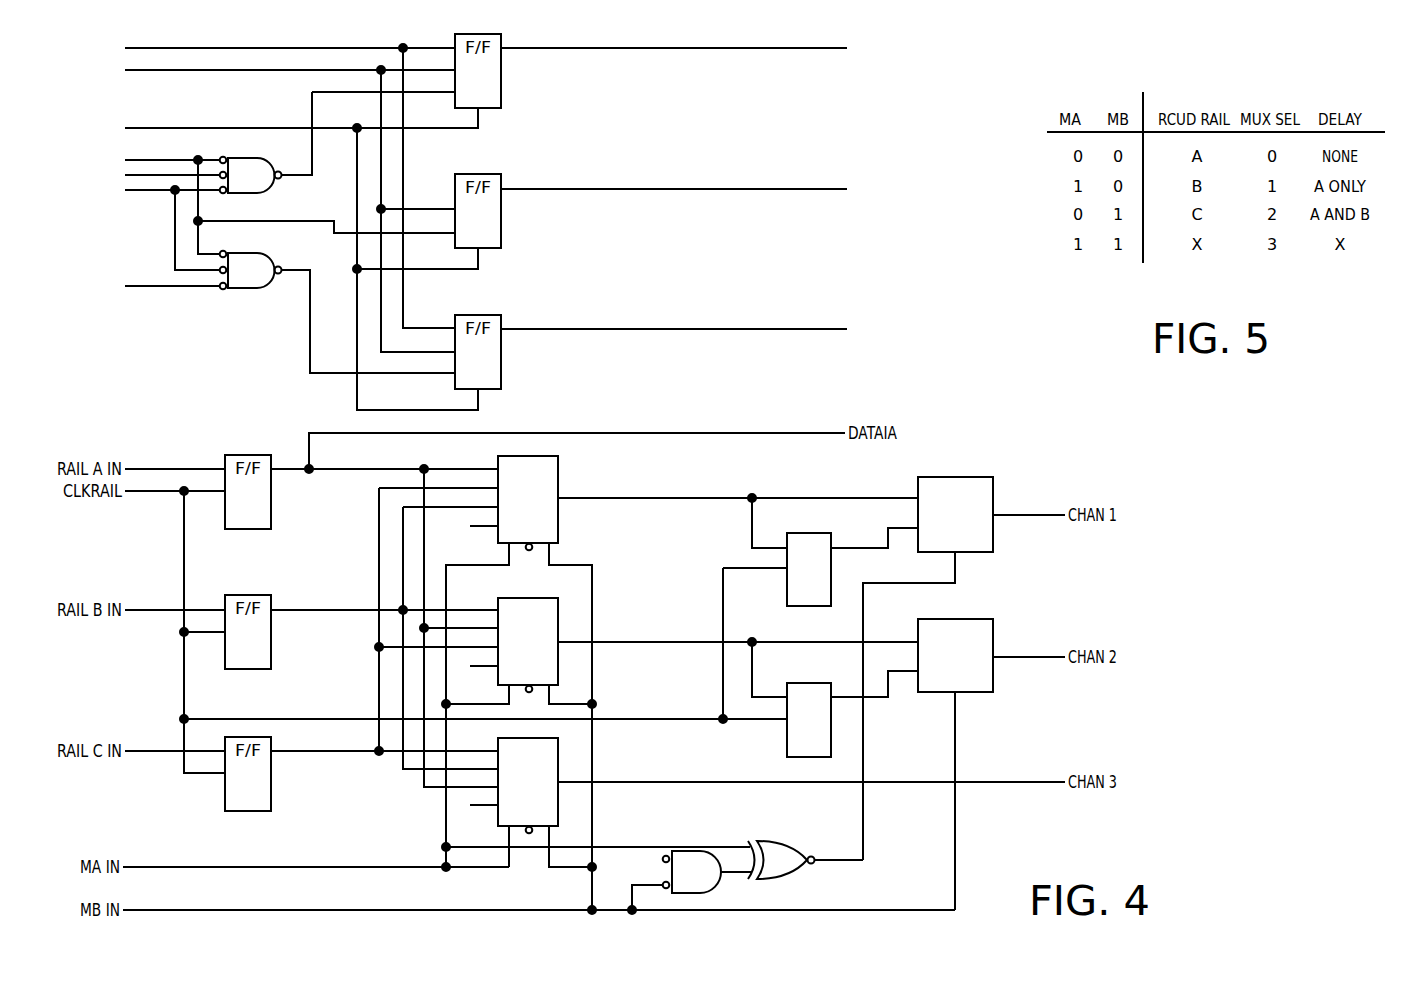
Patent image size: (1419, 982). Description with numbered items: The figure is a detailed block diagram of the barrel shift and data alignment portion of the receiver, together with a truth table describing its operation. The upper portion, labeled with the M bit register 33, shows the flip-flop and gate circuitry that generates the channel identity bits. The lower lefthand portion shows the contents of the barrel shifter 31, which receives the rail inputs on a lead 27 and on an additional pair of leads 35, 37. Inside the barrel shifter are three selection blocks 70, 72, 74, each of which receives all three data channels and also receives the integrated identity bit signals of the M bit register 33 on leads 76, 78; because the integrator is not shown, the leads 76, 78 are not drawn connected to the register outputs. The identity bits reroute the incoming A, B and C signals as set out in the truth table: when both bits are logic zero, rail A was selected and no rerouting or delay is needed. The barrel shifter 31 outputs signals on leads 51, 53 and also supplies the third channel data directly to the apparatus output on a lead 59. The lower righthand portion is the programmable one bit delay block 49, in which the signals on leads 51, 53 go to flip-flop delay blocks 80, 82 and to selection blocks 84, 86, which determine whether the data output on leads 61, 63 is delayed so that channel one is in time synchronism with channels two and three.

In FIG. 4, the lead 27 is at (155, 468).
In FIG. 4, the lead 35 is at (155, 610).
In FIG. 4, the lead 37 is at (153, 750).
In FIG. 4, the barrel shifter 31 is at (297, 649).
In FIG. 4, the selection block 70 is at (558, 518).
In FIG. 4, the selection block 72 is at (498, 600).
In FIG. 4, the selection block 74 is at (498, 742).
In FIG. 4, the lead 76 is at (175, 866).
In FIG. 4, the lead 78 is at (200, 910).
In FIG. 4, the lead 53 is at (673, 497).
In FIG. 4, the lead 51 is at (660, 641).
In FIG. 4, the lead 59 is at (1005, 782).
In FIG. 4, the delay block 80 is at (787, 592).
In FIG. 4, the delay block 82 is at (787, 684).
In FIG. 4, the selection block 84 is at (962, 477).
In FIG. 4, the selection block 86 is at (993, 639).
In FIG. 4, the lead 61 is at (1028, 515).
In FIG. 4, the lead 63 is at (1035, 658).
In FIG. 4, the programmable one bit delay block 49 is at (990, 595).
In FIG. 5, the M bit register 33 is at (592, 163).